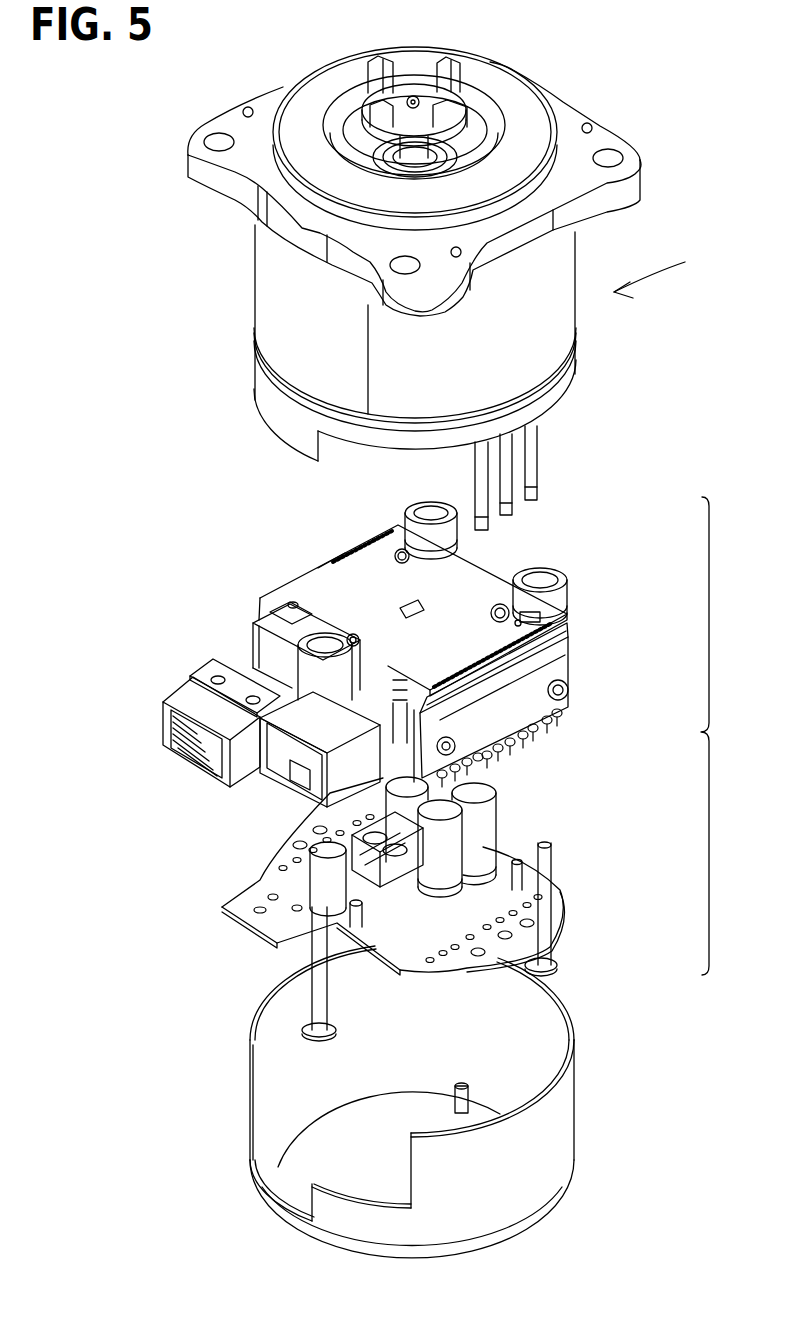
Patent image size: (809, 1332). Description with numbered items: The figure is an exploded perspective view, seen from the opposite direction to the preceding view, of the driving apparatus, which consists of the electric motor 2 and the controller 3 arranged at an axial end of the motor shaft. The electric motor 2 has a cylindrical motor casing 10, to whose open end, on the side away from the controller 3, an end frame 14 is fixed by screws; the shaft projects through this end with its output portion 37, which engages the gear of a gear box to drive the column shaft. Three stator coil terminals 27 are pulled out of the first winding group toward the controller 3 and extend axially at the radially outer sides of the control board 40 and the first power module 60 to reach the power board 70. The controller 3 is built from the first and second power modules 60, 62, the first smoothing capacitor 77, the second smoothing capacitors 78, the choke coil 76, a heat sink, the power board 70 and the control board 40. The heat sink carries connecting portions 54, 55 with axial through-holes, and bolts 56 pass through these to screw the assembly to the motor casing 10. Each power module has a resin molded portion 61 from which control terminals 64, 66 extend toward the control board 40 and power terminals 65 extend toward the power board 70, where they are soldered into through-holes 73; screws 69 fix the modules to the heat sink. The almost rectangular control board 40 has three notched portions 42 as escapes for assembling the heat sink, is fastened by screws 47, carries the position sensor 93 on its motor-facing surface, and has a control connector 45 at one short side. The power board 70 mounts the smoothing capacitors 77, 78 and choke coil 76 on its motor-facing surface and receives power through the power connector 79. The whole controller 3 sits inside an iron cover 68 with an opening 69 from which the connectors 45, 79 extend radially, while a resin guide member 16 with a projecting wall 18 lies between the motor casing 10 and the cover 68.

The electric motor 2 is at (656, 269).
The controller 3 is at (716, 736).
The motor casing 10 is at (278, 284).
The end frame 14 is at (612, 130).
The resin guide member 16 is at (575, 383).
The projecting wall 18 is at (288, 433).
The stator coil terminals 27 is at (540, 453).
The output portion 37 is at (448, 66).
The control board 40 is at (263, 608).
The notched portions 42 is at (416, 511).
The control connector 45 is at (267, 778).
The screws 47 is at (392, 538).
The connecting portion 54 is at (293, 632).
The connecting portion 55 is at (437, 504).
The bolts 56 is at (320, 996).
The first power module 60 is at (517, 694).
The molded portion 61 is at (497, 702).
The second power module 62 is at (253, 643).
The control terminals 64 is at (530, 617).
The power terminals 65 is at (535, 731).
The control terminals 66 is at (332, 578).
The cover 68 is at (572, 1102).
The screws / opening 69 is at (460, 755).
The power board 70 is at (250, 913).
The through-holes 73 is at (280, 869).
The choke coil 76 is at (360, 840).
The first smoothing capacitor 77 is at (323, 880).
The second smoothing capacitors 78 is at (490, 817).
The power connector 79 is at (165, 752).
The position sensor 93 is at (405, 607).